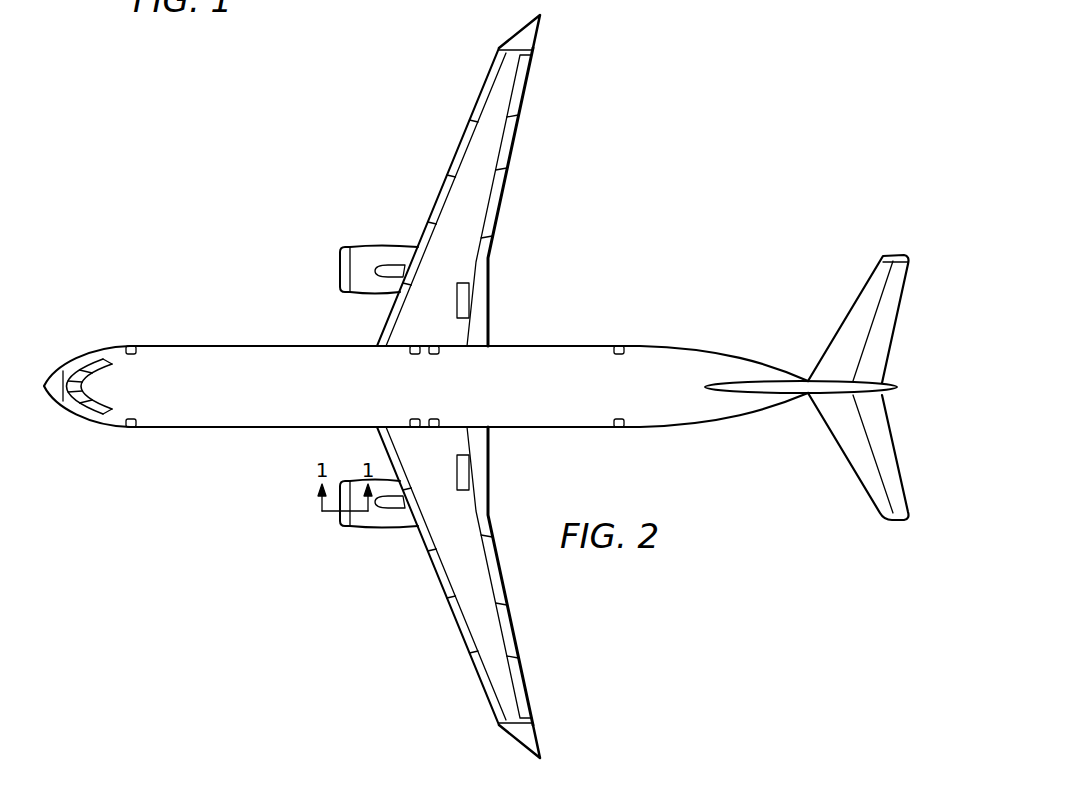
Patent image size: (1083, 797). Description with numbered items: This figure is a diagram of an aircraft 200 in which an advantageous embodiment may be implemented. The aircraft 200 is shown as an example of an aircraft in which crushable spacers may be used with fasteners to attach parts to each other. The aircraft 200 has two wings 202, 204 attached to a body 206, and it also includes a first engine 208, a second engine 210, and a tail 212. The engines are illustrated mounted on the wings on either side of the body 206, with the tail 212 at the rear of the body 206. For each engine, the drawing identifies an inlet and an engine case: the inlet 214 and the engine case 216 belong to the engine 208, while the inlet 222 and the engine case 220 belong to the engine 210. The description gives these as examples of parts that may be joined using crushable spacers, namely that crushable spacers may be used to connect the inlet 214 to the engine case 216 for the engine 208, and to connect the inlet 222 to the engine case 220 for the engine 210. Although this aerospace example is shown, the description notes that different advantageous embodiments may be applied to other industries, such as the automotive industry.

The aircraft 200 is at (617, 146).
The wing 202 is at (472, 115).
The wing 204 is at (472, 655).
The body 206 is at (172, 346).
The engine 208 is at (338, 243).
The engine 210 is at (338, 537).
The tail 212 is at (841, 320).
The inlet 214 is at (343, 281).
The engine case 216 is at (383, 253).
The engine case 220 is at (383, 520).
The inlet 222 is at (347, 490).